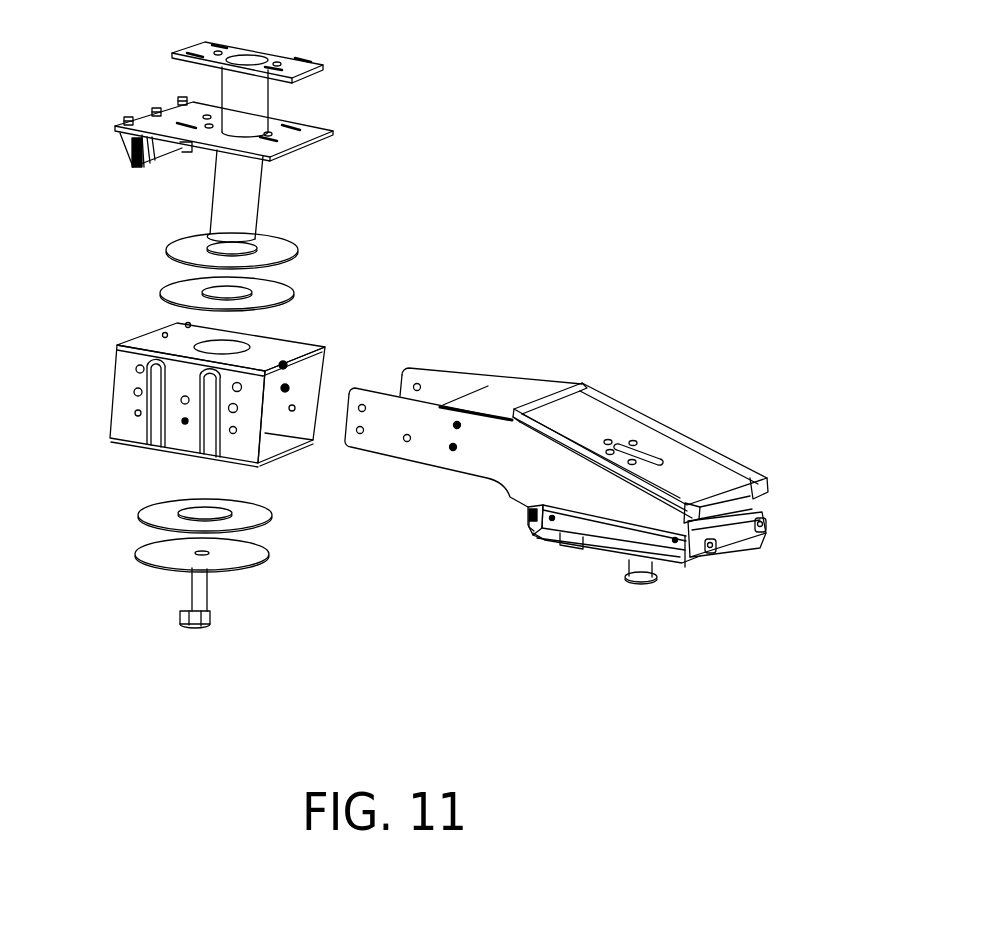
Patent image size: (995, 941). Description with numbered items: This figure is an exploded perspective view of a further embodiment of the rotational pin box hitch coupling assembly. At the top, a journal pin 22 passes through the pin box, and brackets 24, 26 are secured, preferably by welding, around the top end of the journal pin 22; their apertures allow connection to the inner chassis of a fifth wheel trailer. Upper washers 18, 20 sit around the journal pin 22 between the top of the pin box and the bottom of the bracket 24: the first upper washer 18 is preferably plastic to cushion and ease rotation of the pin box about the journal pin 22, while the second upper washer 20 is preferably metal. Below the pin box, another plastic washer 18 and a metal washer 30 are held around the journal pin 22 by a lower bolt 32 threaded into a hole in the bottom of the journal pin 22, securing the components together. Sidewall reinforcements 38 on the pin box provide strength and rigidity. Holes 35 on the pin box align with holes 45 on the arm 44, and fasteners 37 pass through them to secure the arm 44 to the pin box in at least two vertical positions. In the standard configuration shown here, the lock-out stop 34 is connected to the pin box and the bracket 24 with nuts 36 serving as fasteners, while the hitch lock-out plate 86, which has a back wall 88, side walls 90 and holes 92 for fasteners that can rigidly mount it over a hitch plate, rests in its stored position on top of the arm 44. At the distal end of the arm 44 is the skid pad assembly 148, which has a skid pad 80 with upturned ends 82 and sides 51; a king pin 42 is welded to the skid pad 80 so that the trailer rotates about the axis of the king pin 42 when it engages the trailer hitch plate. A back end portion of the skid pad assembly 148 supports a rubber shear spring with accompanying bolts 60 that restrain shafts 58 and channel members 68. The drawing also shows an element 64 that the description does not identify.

The washer 18 is at (256, 409).
The second upper washer 20 is at (277, 237).
The journal pin 22 is at (287, 154).
The bracket 24 is at (263, 122).
The bracket 26 is at (285, 47).
The washer 30 is at (249, 571).
The lower bolt 32 is at (254, 606).
The lock-out stop 34 is at (114, 183).
The holes 35 is at (82, 439).
The nuts 36 is at (181, 98).
The fasteners 37 is at (134, 392).
The sidewall reinforcements 38 is at (202, 413).
The king pin 42 is at (660, 609).
The arm 44 is at (463, 402).
The holes 45 is at (451, 449).
The sides 51 is at (616, 610).
The shafts 58 is at (784, 501).
The bolts 60 is at (713, 549).
The support bar 64 is at (658, 580).
The channel members 68 is at (586, 597).
The skid pad 80 is at (514, 576).
The upturned ends 82 is at (618, 565).
The hitch lock-out plate 86 is at (640, 411).
The back wall 88 is at (640, 392).
The side walls 90 is at (605, 448).
The holes 92 is at (702, 435).
The skid pad assembly 148 is at (476, 587).